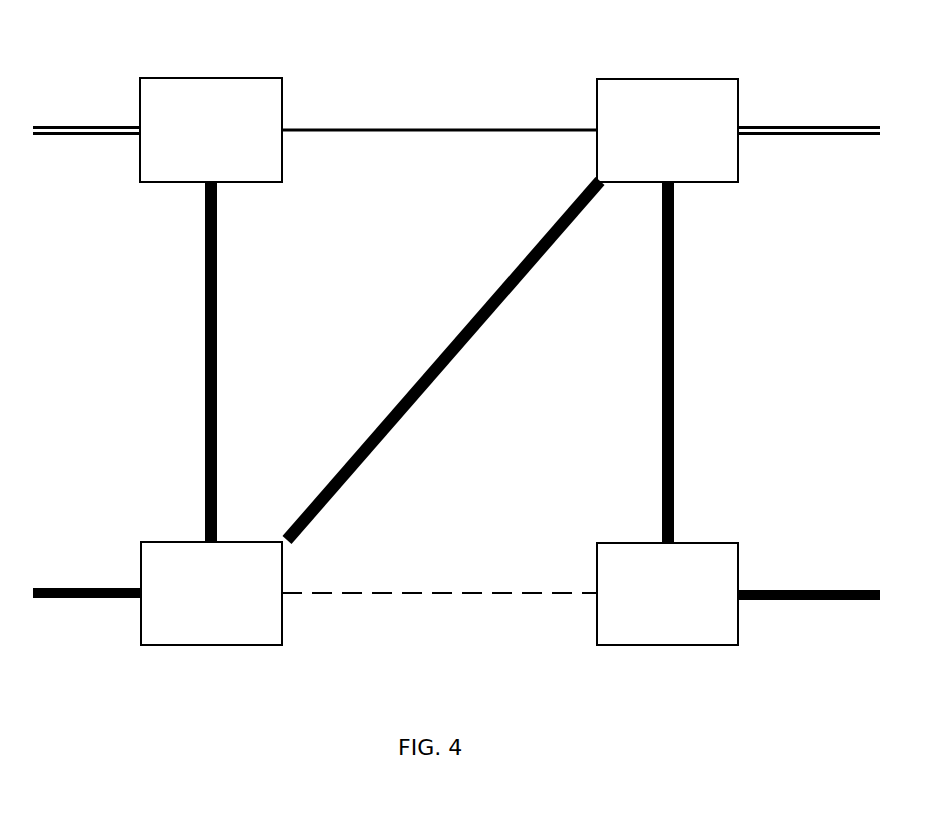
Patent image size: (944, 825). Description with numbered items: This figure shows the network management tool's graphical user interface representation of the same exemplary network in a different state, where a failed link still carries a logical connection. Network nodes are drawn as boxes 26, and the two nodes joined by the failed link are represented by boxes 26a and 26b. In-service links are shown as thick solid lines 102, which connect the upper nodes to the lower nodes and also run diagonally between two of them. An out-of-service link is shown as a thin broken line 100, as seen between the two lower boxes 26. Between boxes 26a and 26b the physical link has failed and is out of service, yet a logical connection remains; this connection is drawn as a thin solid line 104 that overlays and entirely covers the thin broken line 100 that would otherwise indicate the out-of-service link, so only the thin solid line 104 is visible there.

The box 26a is at (175, 70).
The box 26b is at (632, 70).
The boxes 26 is at (175, 655).
The thin broken line 100 is at (440, 140).
The thick solid line 102 is at (226, 364).
The thin solid line 104 is at (317, 140).